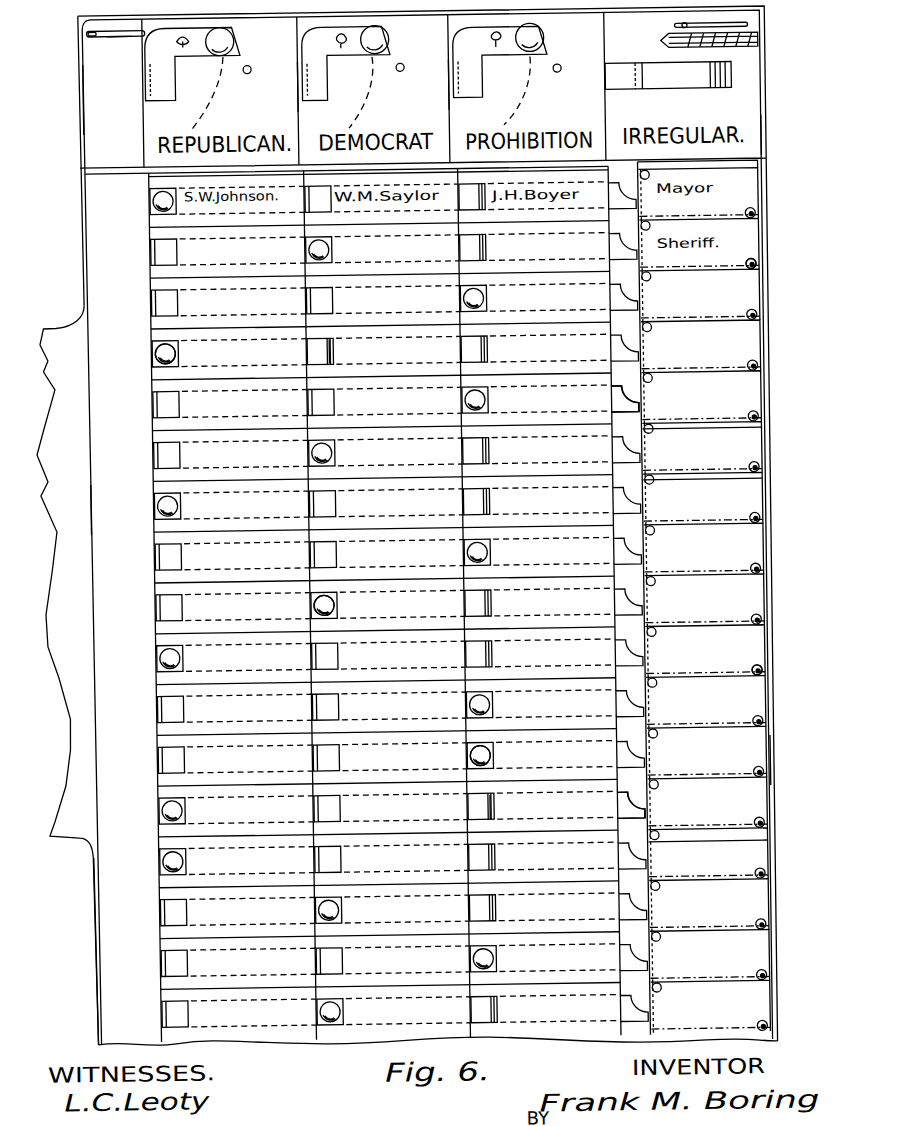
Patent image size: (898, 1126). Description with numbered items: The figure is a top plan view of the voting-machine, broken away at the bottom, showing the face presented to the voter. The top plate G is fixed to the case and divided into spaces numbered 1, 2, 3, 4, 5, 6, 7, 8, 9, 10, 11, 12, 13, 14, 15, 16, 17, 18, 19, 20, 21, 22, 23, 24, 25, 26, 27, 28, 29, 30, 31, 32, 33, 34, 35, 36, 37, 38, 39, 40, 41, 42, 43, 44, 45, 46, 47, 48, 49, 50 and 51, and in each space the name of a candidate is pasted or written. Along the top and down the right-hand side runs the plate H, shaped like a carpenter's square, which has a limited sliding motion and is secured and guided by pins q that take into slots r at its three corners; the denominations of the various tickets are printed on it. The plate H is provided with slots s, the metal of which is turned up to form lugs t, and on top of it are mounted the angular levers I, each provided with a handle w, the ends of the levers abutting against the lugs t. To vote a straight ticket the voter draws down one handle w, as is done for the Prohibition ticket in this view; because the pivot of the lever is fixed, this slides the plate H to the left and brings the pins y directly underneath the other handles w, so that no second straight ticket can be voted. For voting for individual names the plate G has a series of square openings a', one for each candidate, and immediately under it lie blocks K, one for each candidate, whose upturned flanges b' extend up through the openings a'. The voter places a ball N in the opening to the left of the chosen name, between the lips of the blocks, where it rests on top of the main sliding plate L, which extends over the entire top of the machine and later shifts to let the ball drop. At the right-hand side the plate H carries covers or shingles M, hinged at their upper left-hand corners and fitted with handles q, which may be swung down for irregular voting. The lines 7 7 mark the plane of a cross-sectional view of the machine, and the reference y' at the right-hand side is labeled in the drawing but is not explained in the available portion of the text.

The pin q is at (683, 29).
The slot r is at (756, 28).
The plate H is at (766, 770).
The angular lever I is at (345, 63).
The pin y is at (385, 91).
The lug t is at (456, 80).
The handle w is at (551, 33).
The slot s is at (490, 92).
The section line 7 is at (310, 262).
The square opening a' is at (428, 441).
The upturned flange b' is at (429, 579).
The ball N is at (508, 755).
The top plate G is at (111, 509).
The cover M is at (705, 649).
The slide knob y' is at (779, 455).
The block K is at (624, 795).
The main sliding plate L is at (93, 862).
The candidate space 1 is at (163, 195).
The candidate space 2 is at (163, 246).
The candidate space 3 is at (164, 297).
The candidate space 4 is at (165, 348).
The candidate space 5 is at (166, 398).
The candidate space 6 is at (166, 449).
The candidate space 8 is at (168, 551).
The candidate space 9 is at (169, 602).
The candidate space 10 is at (169, 652).
The candidate space 11 is at (170, 703).
The candidate space 12 is at (171, 754).
The candidate space 13 is at (172, 805).
The candidate space 14 is at (173, 856).
The candidate space 15 is at (173, 906).
The candidate space 16 is at (174, 957).
The candidate space 17 is at (175, 1008).
The candidate space 18 is at (318, 193).
The candidate space 19 is at (318, 244).
The candidate space 20 is at (319, 295).
The candidate space 21 is at (320, 345).
The candidate space 22 is at (321, 396).
The candidate space 23 is at (321, 447).
The candidate space 24 is at (322, 498).
The candidate space 25 is at (323, 548).
The candidate space 26 is at (324, 599).
The candidate space 27 is at (324, 650).
The candidate space 28 is at (325, 701).
The candidate space 29 is at (326, 752).
The candidate space 30 is at (327, 802).
The candidate space 31 is at (327, 853).
The candidate space 32 is at (328, 904).
The candidate space 33 is at (329, 955).
The candidate space 34 is at (330, 1006).
The candidate space 35 is at (472, 191).
The candidate space 36 is at (472, 241).
The candidate space 37 is at (473, 292).
The candidate space 38 is at (474, 343).
The candidate space 39 is at (475, 394).
The candidate space 40 is at (475, 445).
The candidate space 41 is at (476, 495).
The candidate space 42 is at (477, 546).
The candidate space 43 is at (478, 597).
The candidate space 44 is at (478, 648).
The candidate space 45 is at (479, 699).
The candidate space 46 is at (480, 749).
The candidate space 47 is at (481, 800).
The candidate space 48 is at (481, 851).
The candidate space 49 is at (482, 902).
The candidate space 50 is at (483, 953).
The candidate space 51 is at (484, 1003).